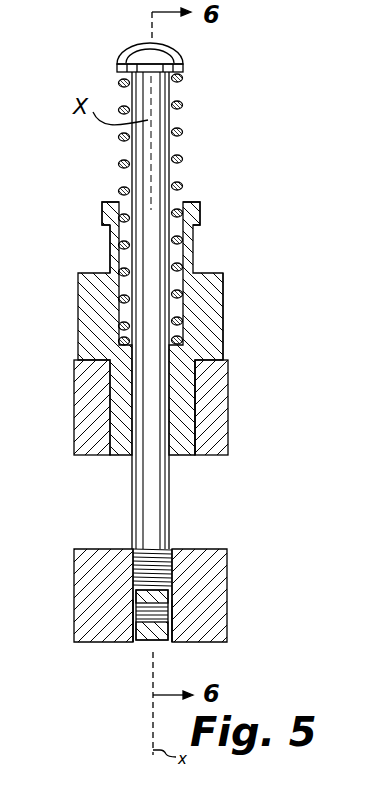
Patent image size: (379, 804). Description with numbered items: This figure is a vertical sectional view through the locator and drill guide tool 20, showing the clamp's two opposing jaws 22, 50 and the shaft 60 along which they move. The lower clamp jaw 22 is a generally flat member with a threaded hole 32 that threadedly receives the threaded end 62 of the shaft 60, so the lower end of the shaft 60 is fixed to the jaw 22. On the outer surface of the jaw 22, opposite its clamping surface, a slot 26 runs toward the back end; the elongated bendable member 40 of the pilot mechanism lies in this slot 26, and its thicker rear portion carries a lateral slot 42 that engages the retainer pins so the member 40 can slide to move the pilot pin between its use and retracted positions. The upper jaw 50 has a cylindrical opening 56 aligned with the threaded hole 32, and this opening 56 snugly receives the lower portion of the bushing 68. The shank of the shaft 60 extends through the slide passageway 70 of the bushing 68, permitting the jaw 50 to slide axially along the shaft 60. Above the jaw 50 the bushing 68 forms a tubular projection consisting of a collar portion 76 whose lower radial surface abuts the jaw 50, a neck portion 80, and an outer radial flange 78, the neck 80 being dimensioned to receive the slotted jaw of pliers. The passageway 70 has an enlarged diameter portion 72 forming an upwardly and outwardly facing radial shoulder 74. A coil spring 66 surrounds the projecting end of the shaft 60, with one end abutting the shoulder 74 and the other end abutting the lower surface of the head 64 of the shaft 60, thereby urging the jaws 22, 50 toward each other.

The locator and drill guide tool 20 is at (263, 154).
The clamp jaw 22 is at (227, 560).
The slot 26 is at (137, 644).
The threaded hole 32 is at (156, 560).
The elongated bendable member 40 is at (166, 645).
The slot 42 is at (150, 620).
The jaw 50 is at (228, 411).
The opening 56 is at (191, 427).
The shaft 60 is at (135, 496).
The threaded end 62 is at (136, 557).
The head 64 is at (133, 47).
The coil spring 66 is at (176, 106).
The bushing 68 is at (228, 298).
The slide passageway 70 is at (140, 462).
The enlarged diameter portion 72 is at (102, 205).
The radial shoulder 74 is at (131, 348).
The collar portion 76 is at (224, 338).
The outer radial flange 78 is at (199, 204).
The neck portion 80 is at (111, 247).